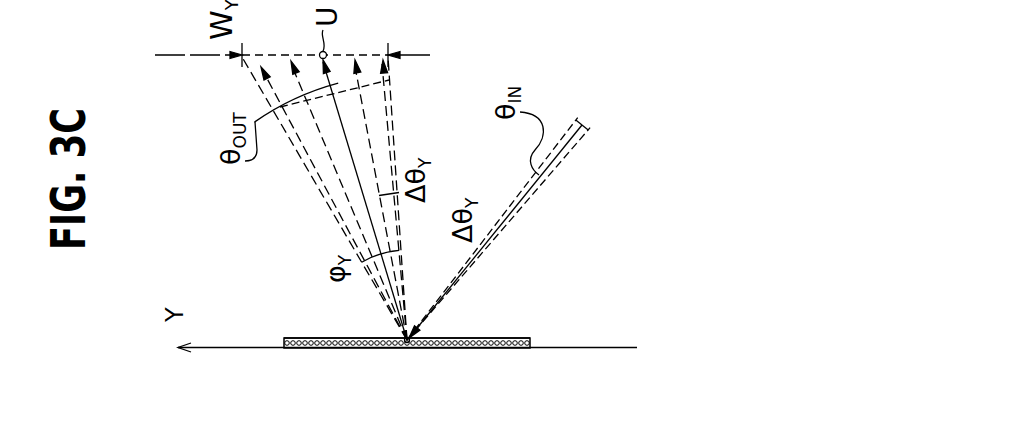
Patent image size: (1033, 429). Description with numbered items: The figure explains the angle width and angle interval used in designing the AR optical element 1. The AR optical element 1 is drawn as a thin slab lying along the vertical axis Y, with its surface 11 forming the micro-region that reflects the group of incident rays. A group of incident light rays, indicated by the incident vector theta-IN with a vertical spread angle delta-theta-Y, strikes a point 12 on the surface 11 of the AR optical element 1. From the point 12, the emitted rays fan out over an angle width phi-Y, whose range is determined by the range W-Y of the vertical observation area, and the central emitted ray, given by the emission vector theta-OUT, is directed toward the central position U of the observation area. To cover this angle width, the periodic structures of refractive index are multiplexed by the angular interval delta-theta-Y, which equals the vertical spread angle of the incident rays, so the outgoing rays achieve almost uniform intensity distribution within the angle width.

The AR optical element 1 is at (283, 338).
The surface 11 is at (307, 338).
The point 12 is at (405, 346).